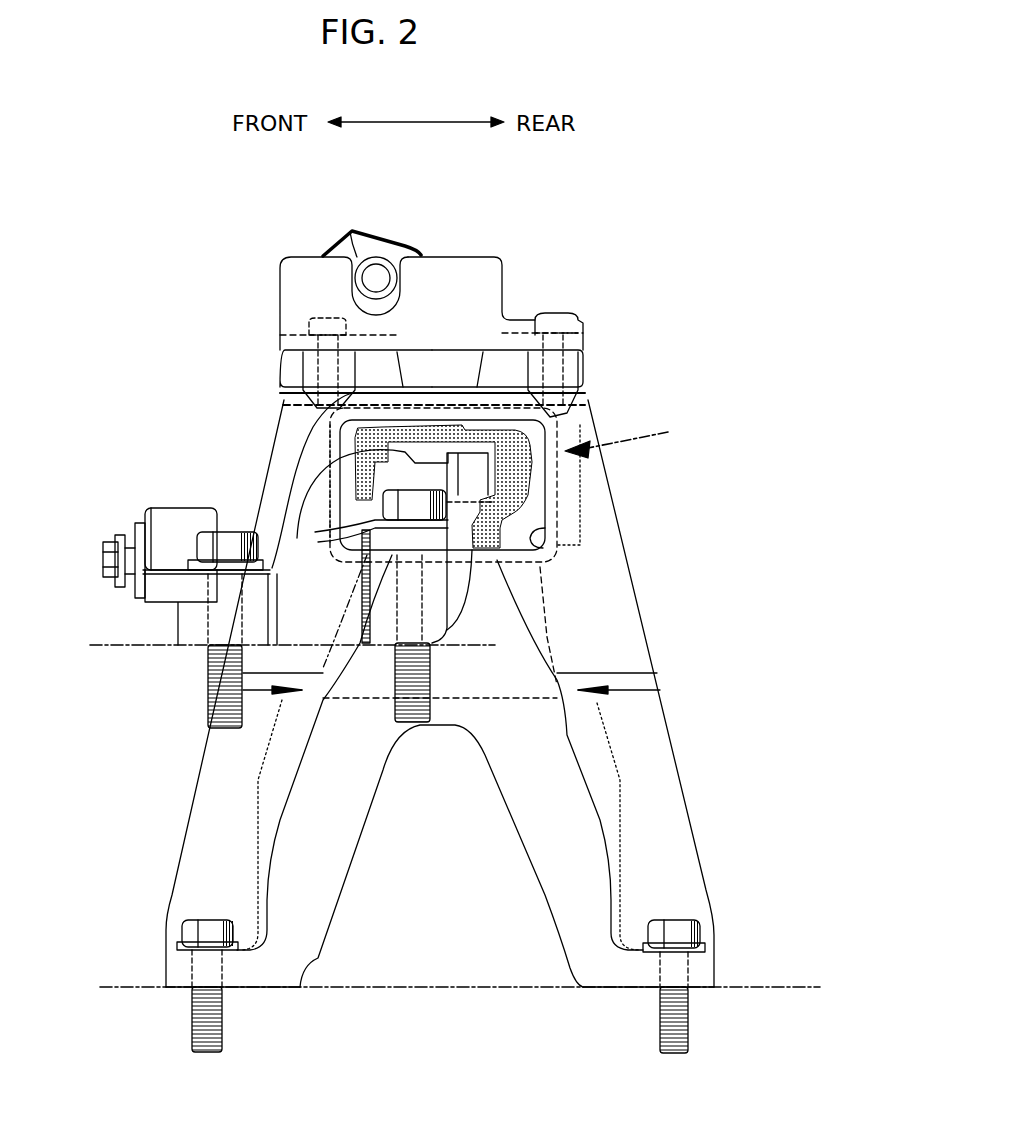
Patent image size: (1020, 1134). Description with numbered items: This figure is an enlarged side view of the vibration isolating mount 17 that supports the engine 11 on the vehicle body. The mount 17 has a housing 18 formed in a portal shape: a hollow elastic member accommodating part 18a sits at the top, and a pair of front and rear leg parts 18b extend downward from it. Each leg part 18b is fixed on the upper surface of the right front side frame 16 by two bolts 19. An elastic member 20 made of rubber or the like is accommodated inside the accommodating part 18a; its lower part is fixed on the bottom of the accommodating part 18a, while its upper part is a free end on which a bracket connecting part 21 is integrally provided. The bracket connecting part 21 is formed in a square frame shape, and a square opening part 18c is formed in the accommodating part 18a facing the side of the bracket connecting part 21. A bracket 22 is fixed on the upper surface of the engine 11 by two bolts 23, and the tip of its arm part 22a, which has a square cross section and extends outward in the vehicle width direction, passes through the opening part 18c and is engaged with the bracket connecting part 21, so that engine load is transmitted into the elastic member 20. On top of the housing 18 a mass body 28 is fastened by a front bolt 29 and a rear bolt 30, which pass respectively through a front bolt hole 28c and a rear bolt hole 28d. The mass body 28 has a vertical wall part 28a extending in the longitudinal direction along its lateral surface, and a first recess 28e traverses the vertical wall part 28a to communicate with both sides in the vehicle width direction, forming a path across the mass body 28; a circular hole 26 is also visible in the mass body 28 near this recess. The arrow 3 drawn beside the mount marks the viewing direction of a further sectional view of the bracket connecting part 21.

The section line III-III 3 is at (631, 433).
The engine 11 is at (130, 645).
The right front side frame 16 is at (130, 985).
The vibration isolating mount 17 is at (677, 573).
The housing 18 is at (676, 706).
The elastic member accommodating part 18a is at (590, 505).
The leg part 18b is at (226, 785).
The opening part 18c is at (545, 528).
The bolt 19 is at (203, 920).
The elastic member 20 is at (545, 640).
The bracket connecting part 21 is at (541, 444).
The bracket 22 is at (296, 476).
The arm part 22a is at (436, 448).
The bolt 23 is at (397, 493).
The hole 26 is at (382, 279).
The mass body 28 is at (489, 246).
The vertical wall part 28a is at (310, 279).
The front bolt hole 28c is at (327, 369).
The rear bolt hole 28d is at (583, 353).
The first recess 28e is at (348, 226).
The front bolt 29 is at (328, 313).
The rear bolt 30 is at (553, 318).